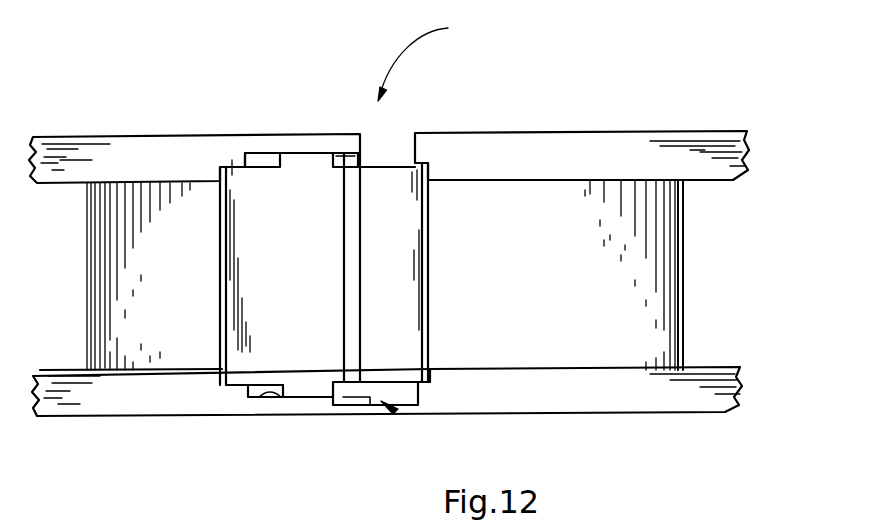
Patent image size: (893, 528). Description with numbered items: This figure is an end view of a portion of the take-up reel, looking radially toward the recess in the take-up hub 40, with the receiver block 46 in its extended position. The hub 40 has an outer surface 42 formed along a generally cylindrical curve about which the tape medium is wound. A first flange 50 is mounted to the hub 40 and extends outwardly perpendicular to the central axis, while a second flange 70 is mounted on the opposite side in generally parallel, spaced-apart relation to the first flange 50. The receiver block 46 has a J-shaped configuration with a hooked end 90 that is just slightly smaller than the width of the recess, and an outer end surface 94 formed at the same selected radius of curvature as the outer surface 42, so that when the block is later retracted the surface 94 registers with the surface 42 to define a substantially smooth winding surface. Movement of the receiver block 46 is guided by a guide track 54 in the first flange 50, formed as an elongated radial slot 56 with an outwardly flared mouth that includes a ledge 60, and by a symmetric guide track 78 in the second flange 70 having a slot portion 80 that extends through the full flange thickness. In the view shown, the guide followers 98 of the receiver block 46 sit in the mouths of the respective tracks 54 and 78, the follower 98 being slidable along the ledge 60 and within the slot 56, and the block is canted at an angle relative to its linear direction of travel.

The take-up hub 40 is at (677, 270).
The outer surface 42 is at (525, 283).
The receiver block 46 is at (256, 349).
The first flange 50 is at (550, 392).
The guide track 54 is at (347, 393).
The elongated radial slot 56 is at (390, 406).
The ledge 60 is at (280, 400).
The second flange 70 is at (530, 150).
The guide track 78 is at (348, 156).
The slot portion 80 is at (426, 61).
The hooked end 90 is at (387, 167).
The outer end surface 94 is at (304, 283).
The guide follower 98 is at (300, 158).